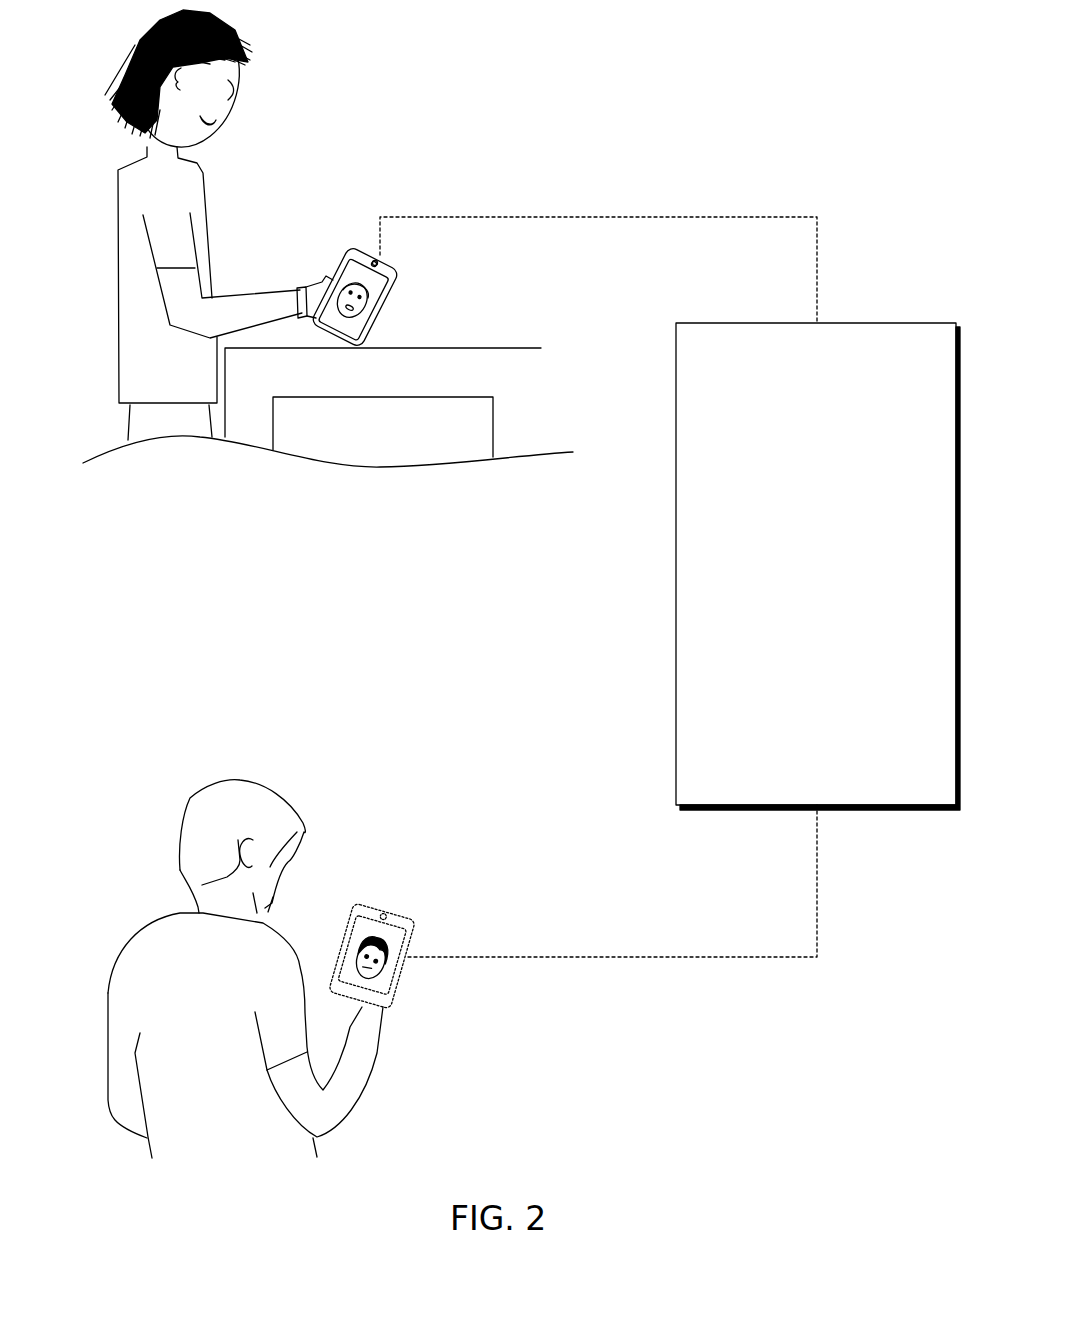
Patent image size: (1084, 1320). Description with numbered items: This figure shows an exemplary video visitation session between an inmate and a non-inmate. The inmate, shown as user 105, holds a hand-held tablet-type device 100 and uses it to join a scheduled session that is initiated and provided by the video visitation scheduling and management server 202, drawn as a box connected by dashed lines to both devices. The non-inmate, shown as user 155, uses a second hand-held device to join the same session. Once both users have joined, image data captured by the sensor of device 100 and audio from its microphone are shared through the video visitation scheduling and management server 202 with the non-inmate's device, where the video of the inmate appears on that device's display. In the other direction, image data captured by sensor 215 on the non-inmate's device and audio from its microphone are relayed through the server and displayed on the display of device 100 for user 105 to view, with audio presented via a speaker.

The user 105 is at (140, 37).
The device 100 is at (403, 262).
The video visitation scheduling and management server 202 is at (818, 566).
The user 155 is at (172, 942).
The sensor 215 is at (382, 913).